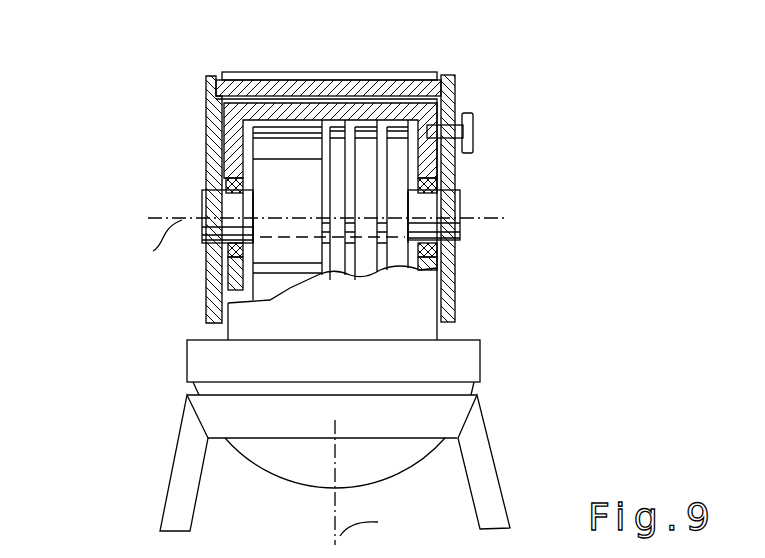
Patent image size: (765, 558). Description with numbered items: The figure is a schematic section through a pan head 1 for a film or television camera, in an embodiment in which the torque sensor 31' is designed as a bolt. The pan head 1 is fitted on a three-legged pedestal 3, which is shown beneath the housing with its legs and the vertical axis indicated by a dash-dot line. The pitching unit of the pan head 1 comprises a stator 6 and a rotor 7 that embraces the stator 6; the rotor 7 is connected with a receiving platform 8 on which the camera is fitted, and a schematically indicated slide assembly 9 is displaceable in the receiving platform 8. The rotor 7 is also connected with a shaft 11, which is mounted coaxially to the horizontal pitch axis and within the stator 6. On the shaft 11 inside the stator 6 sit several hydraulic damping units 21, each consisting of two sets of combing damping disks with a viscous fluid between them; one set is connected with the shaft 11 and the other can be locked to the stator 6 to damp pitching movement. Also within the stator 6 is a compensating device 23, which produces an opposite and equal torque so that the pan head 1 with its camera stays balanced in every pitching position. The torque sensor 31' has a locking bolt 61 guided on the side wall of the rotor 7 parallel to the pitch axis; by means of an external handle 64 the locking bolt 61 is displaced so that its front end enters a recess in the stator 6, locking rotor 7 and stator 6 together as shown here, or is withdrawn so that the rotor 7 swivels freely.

The pan head 1 is at (126, 119).
The three-legged pedestal 3 is at (169, 431).
The stator 6 is at (420, 300).
The rotor 7 is at (456, 104).
The receiving platform 8 is at (446, 74).
The slide assembly 9 is at (423, 77).
The shaft 11 is at (210, 190).
The hydraulic damping units 21 is at (397, 133).
The compensating device 23 is at (290, 137).
The torque sensor 31' is at (492, 134).
The locking bolt 61 is at (460, 137).
The external handle 64 is at (474, 142).